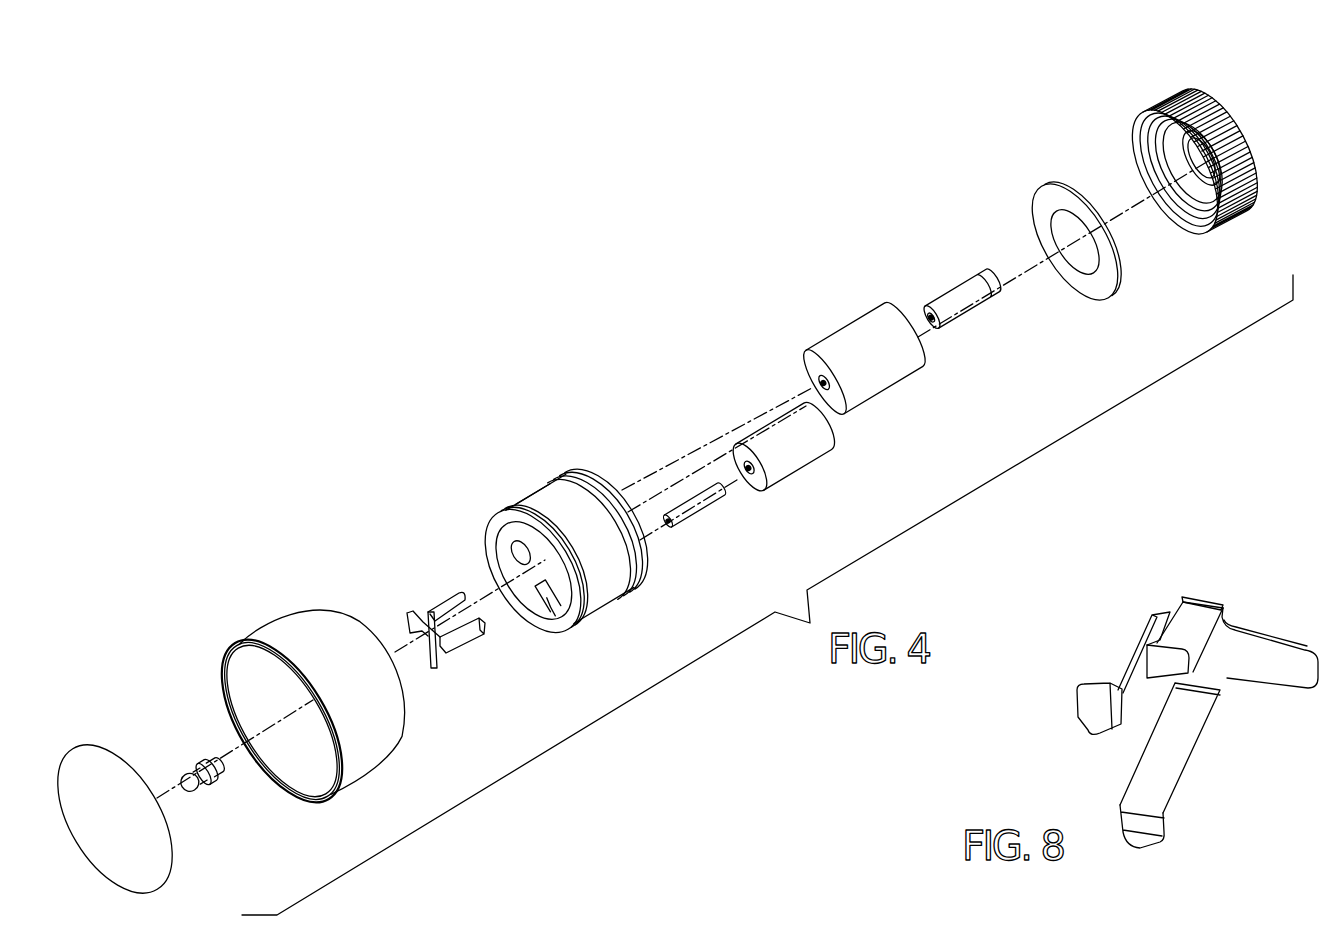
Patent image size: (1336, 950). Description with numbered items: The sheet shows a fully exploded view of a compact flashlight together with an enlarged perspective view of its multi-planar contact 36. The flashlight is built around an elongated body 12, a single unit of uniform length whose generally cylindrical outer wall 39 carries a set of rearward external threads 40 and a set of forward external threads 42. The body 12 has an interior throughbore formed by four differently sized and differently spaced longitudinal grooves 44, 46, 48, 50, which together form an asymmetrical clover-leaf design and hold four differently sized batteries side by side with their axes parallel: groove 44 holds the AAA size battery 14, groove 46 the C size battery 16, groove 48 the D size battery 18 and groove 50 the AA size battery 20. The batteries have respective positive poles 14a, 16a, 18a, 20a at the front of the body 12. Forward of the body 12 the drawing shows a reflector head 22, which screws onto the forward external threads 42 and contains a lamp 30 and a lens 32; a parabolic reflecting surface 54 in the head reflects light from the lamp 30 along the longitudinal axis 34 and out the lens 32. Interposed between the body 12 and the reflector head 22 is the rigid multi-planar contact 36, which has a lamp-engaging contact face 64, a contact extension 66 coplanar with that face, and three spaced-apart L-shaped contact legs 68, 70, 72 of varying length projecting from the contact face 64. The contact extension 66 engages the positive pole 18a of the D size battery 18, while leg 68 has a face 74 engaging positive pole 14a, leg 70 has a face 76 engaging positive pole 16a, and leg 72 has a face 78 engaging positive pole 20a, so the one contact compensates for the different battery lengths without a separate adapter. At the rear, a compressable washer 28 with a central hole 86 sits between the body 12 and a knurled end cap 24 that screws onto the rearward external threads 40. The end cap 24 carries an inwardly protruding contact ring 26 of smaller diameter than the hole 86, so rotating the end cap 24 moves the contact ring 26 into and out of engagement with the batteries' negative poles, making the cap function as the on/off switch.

In FIG. 4, the elongated body 12 is at (542, 478).
In FIG. 4, the battery 14 is at (708, 505).
In FIG. 4, the positive pole 14a is at (667, 527).
In FIG. 4, the battery 16 is at (808, 443).
In FIG. 4, the positive pole 16a is at (763, 483).
In FIG. 4, the battery 18 is at (870, 337).
In FIG. 4, the positive pole 18a is at (812, 377).
In FIG. 4, the battery 20 is at (968, 293).
In FIG. 4, the positive pole 20a is at (930, 317).
In FIG. 4, the reflector head 22 is at (313, 628).
In FIG. 4, the end cap 24 is at (1253, 142).
In FIG. 4, the contact ring 26 is at (1210, 200).
In FIG. 4, the compressable washer 28 is at (1068, 187).
In FIG. 4, the lamp 30 is at (195, 750).
In FIG. 4, the lens 32 is at (92, 745).
In FIG. 4, the longitudinal axis 34 is at (276, 735).
In FIG. 4, the multi-planar contact 36 is at (438, 588).
In FIG. 8, the multi-planar contact 36 is at (1256, 590).
In FIG. 4, the cylindrical outer wall 39 is at (593, 588).
In FIG. 4, the rearward external threads 40 is at (590, 482).
In FIG. 4, the forward external threads 42 is at (520, 512).
In FIG. 4, the longitudinal groove 44 is at (530, 617).
In FIG. 4, the longitudinal groove 46 is at (557, 610).
In FIG. 4, the longitudinal groove 48 is at (490, 543).
In FIG. 4, the longitudinal groove 50 is at (533, 547).
In FIG. 4, the parabolic reflecting surface 54 is at (237, 667).
In FIG. 4, the lamp-engaging contact face 64 is at (433, 650).
In FIG. 8, the lamp-engaging contact face 64 is at (1207, 600).
In FIG. 4, the contact extension 66 is at (410, 625).
In FIG. 8, the contact extension 66 is at (1290, 667).
In FIG. 8, the contact leg 68 is at (1170, 767).
In FIG. 8, the contact leg 70 is at (1133, 687).
In FIG. 8, the contact leg 72 is at (1195, 617).
In FIG. 8, the face 74 is at (1150, 837).
In FIG. 8, the face 76 is at (1093, 710).
In FIG. 8, the face 78 is at (1157, 657).
In FIG. 4, the central hole 86 is at (1090, 263).